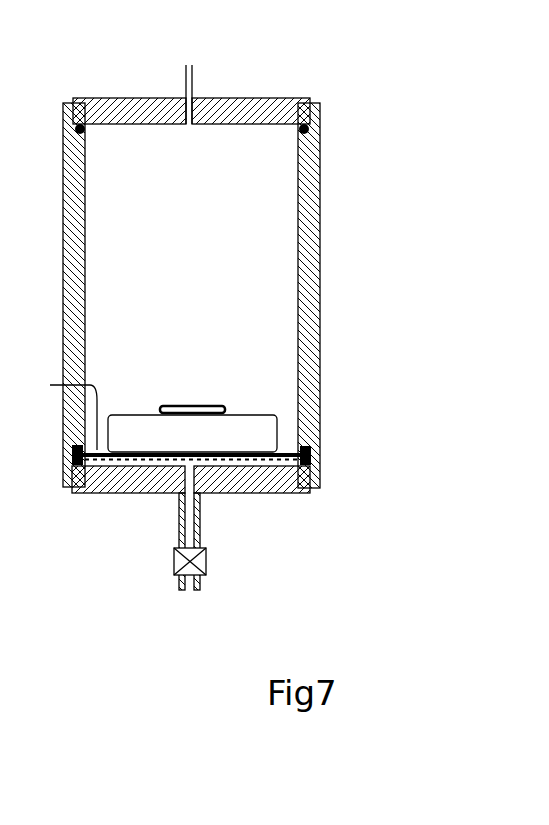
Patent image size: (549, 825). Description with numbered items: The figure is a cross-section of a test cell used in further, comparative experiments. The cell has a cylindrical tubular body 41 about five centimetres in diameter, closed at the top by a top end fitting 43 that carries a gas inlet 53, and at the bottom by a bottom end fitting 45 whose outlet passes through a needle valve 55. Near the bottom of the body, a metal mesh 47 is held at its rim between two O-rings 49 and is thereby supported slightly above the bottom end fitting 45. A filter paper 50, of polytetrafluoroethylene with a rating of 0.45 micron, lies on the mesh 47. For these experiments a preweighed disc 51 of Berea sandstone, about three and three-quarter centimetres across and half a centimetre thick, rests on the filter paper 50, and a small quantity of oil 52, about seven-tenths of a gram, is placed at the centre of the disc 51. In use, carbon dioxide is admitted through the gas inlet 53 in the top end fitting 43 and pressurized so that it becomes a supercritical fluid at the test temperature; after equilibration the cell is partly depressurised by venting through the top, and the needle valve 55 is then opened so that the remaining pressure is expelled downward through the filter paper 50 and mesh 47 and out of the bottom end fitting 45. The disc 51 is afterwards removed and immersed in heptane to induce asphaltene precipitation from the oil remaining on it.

The cylindrical tubular body 41 is at (320, 230).
The top end fitting 43 is at (265, 98).
The bottom end fitting 45 is at (262, 493).
The metal mesh 47 is at (302, 493).
The O-rings 49 is at (311, 449).
The filter paper 50 is at (61, 411).
The disc 51 is at (262, 435).
The oil 52 is at (187, 406).
The gas inlet 53 is at (183, 73).
The needle valve 55 is at (174, 556).